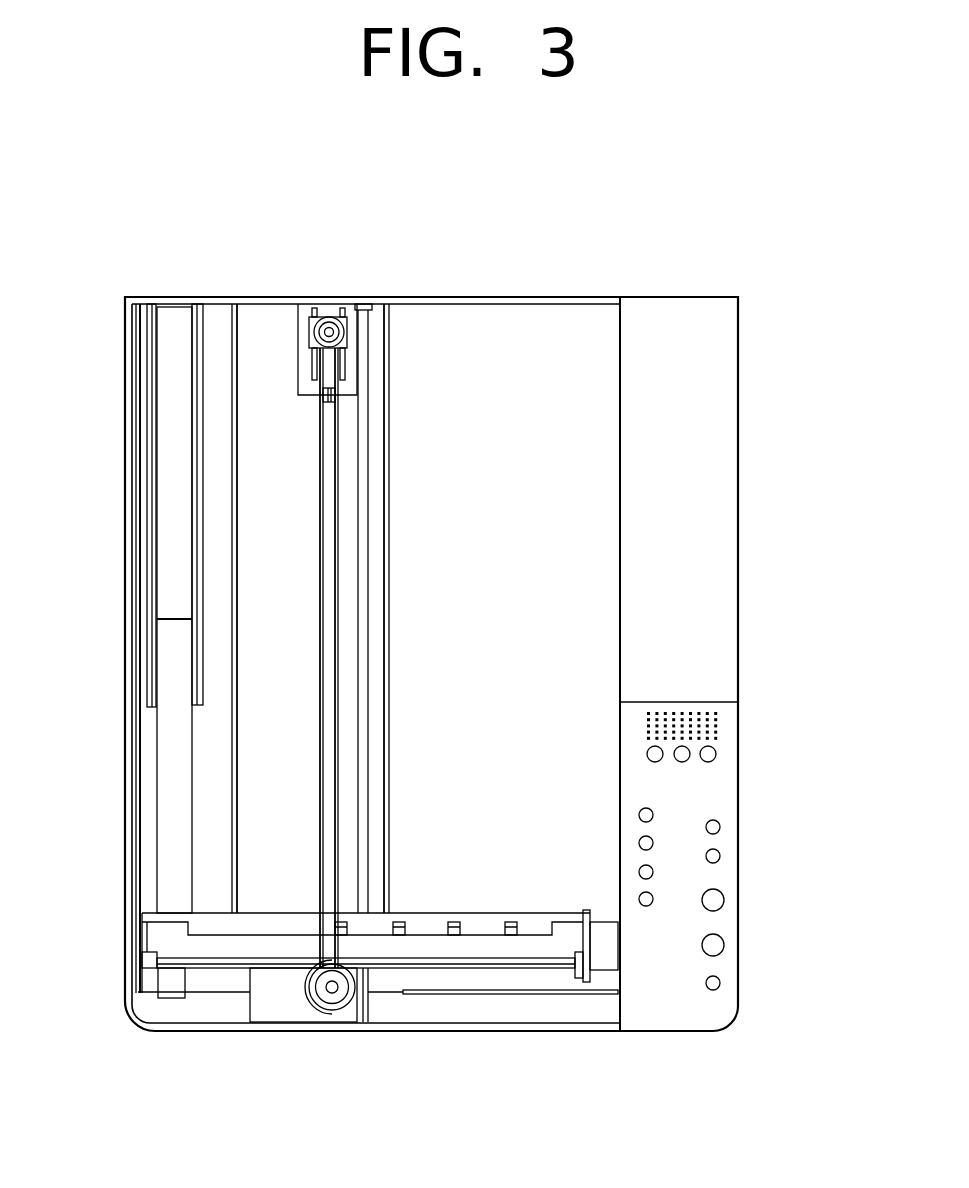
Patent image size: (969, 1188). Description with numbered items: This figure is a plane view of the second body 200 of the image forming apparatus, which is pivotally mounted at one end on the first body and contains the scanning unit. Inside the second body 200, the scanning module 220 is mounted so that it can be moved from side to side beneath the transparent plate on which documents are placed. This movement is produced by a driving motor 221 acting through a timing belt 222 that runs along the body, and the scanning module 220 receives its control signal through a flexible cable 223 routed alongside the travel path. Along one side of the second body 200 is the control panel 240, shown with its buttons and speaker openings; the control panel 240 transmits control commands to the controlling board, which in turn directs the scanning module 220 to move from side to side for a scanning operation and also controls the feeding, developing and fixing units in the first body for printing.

The second body 200 is at (650, 236).
The scanning module 220 is at (478, 947).
The driving motor 221 is at (331, 995).
The timing belt 222 is at (337, 638).
The flexible cable 223 is at (172, 813).
The control panel 240 is at (712, 975).